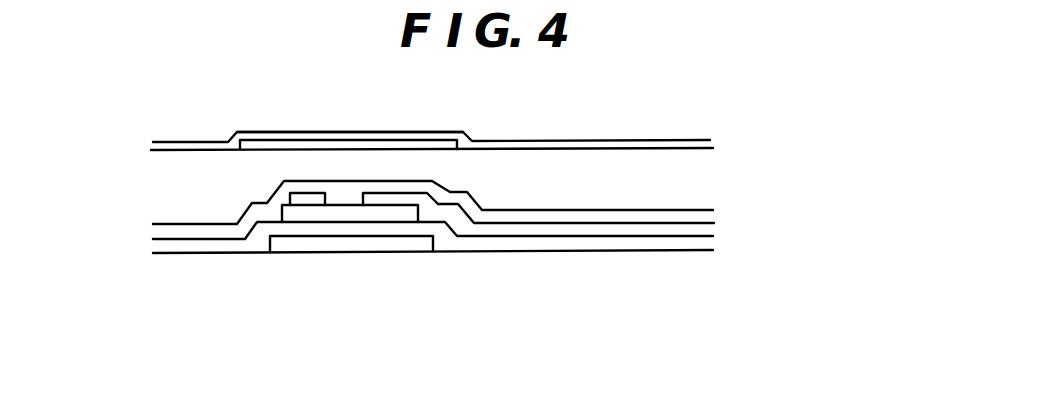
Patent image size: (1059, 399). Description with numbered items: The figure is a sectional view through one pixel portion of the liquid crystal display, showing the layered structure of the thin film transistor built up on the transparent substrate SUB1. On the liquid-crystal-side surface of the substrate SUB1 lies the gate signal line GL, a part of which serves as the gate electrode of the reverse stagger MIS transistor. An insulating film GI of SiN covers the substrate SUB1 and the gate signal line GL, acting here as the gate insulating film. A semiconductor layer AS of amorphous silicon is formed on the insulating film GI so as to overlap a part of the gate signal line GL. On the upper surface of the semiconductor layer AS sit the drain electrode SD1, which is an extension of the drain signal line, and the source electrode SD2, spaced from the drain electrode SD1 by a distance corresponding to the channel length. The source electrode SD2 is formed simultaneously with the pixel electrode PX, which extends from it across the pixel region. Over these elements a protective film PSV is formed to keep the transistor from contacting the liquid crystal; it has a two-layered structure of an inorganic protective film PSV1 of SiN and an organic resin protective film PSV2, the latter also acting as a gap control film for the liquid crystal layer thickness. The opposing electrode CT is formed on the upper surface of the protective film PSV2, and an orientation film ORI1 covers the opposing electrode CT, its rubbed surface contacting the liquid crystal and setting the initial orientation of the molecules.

The transparent substrate SUB1 is at (174, 342).
The gate signal line GL is at (290, 251).
The insulating film GI is at (705, 245).
The semiconductor layer AS is at (400, 206).
The drain electrode SD1 is at (307, 195).
The source electrode SD2 is at (378, 193).
The pixel electrode PX is at (572, 222).
The protective film PSV1 is at (708, 217).
The protective film PSV2 is at (692, 162).
The protective film PSV is at (507, 178).
The opposing electrode CT is at (438, 139).
The orientation film ORI1 is at (683, 140).